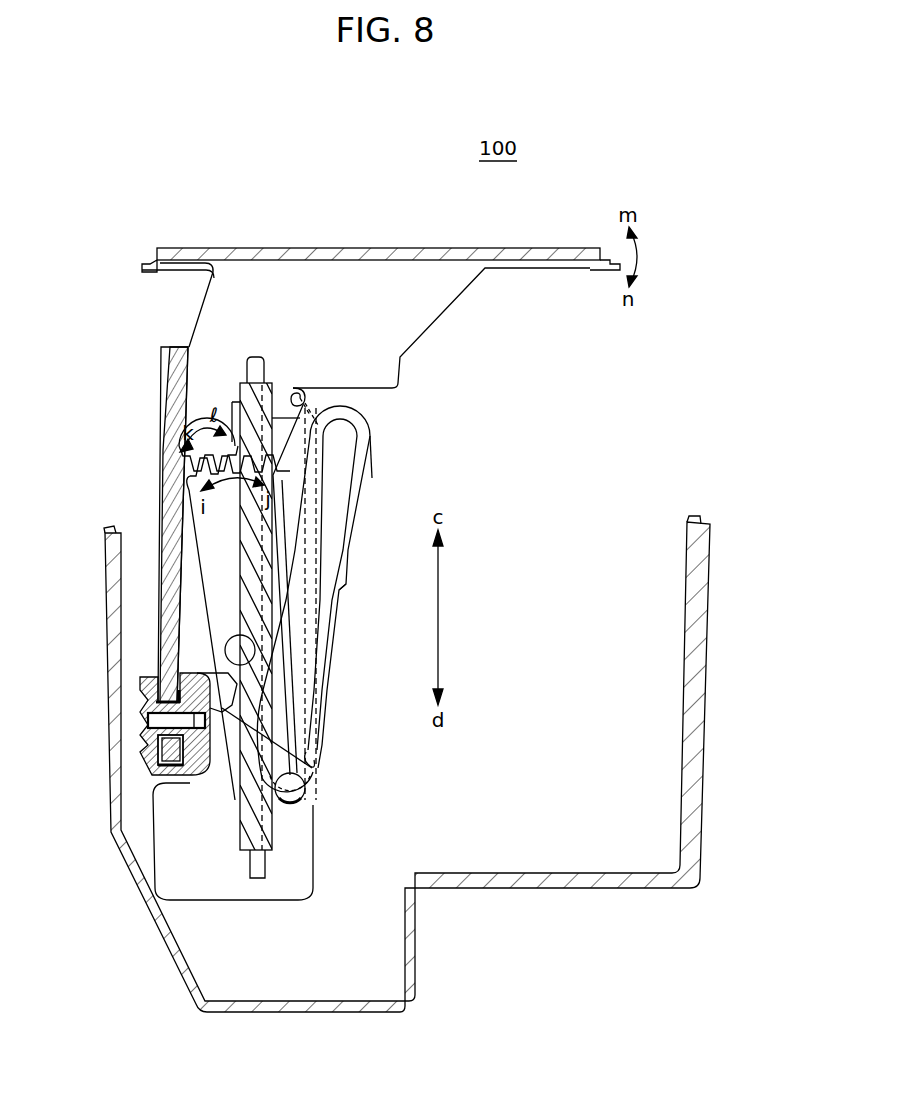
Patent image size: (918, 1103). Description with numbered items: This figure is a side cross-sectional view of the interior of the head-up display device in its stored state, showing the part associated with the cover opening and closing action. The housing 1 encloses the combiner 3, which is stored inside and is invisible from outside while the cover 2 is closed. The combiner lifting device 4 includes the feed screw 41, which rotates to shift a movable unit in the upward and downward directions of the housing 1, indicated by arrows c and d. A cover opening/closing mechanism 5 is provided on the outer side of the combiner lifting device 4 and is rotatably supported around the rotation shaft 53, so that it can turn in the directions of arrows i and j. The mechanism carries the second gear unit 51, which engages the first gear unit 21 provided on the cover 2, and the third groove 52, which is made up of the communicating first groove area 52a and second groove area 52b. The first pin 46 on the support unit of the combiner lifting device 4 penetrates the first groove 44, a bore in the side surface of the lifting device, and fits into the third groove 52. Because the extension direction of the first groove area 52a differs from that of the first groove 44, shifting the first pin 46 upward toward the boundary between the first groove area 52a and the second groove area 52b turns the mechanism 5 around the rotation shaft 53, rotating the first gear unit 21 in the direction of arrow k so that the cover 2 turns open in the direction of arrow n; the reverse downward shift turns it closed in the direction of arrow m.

The housing 1 is at (542, 880).
The cover 2 is at (356, 248).
The combiner 3 is at (160, 496).
The combiner lifting device 4 is at (190, 865).
The cover opening/closing mechanism 5 is at (352, 543).
The first gear unit 21 is at (168, 458).
The feed screw 41 is at (257, 358).
The first groove 44 is at (288, 392).
The first pin 46 is at (305, 790).
The second gear unit 51 is at (186, 478).
The third groove 52 is at (332, 466).
The first groove area 52a is at (318, 762).
The second groove area 52b is at (346, 598).
The rotation shaft 53 is at (236, 650).